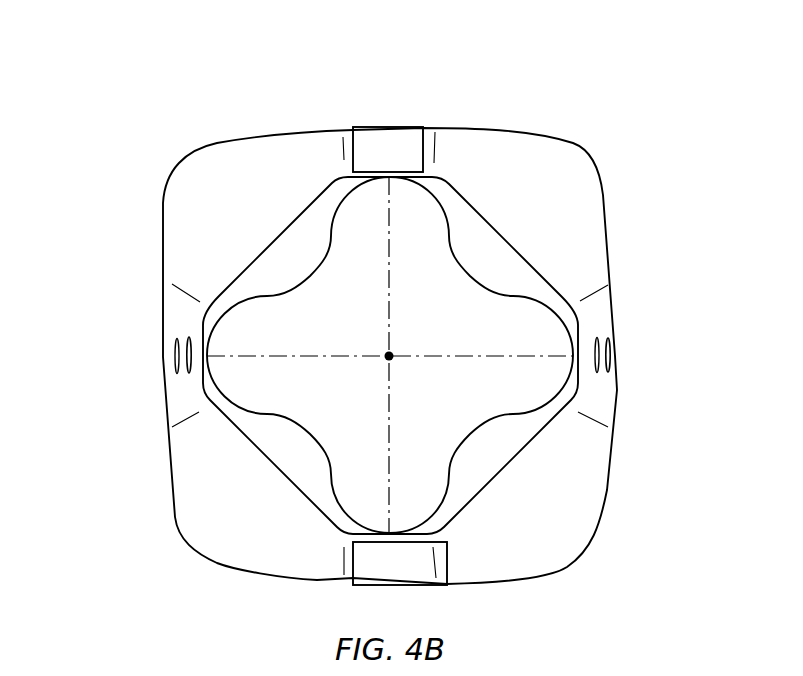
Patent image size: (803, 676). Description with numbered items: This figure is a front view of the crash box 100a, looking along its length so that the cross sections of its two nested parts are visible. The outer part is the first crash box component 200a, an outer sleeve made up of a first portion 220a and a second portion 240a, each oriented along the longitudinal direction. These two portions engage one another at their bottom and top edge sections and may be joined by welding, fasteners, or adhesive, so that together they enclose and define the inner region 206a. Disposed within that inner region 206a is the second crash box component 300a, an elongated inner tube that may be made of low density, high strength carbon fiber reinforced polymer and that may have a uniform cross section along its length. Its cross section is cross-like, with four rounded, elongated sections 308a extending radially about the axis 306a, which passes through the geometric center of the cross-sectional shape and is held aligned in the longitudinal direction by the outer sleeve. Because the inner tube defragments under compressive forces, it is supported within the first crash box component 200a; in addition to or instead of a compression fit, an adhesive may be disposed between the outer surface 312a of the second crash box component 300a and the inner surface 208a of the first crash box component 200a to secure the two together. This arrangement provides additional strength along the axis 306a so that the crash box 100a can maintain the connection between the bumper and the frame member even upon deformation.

The crash box 100a is at (130, 176).
The first crash box component 200a is at (414, 353).
The first portion 220a is at (583, 238).
The second portion 240a is at (213, 186).
The second crash box component 300a is at (451, 234).
The inner region 206a is at (493, 279).
The inner surface 208a is at (289, 477).
The axis 306a is at (390, 356).
The elongated sections 308a is at (345, 190).
The outer surface 312a is at (440, 202).